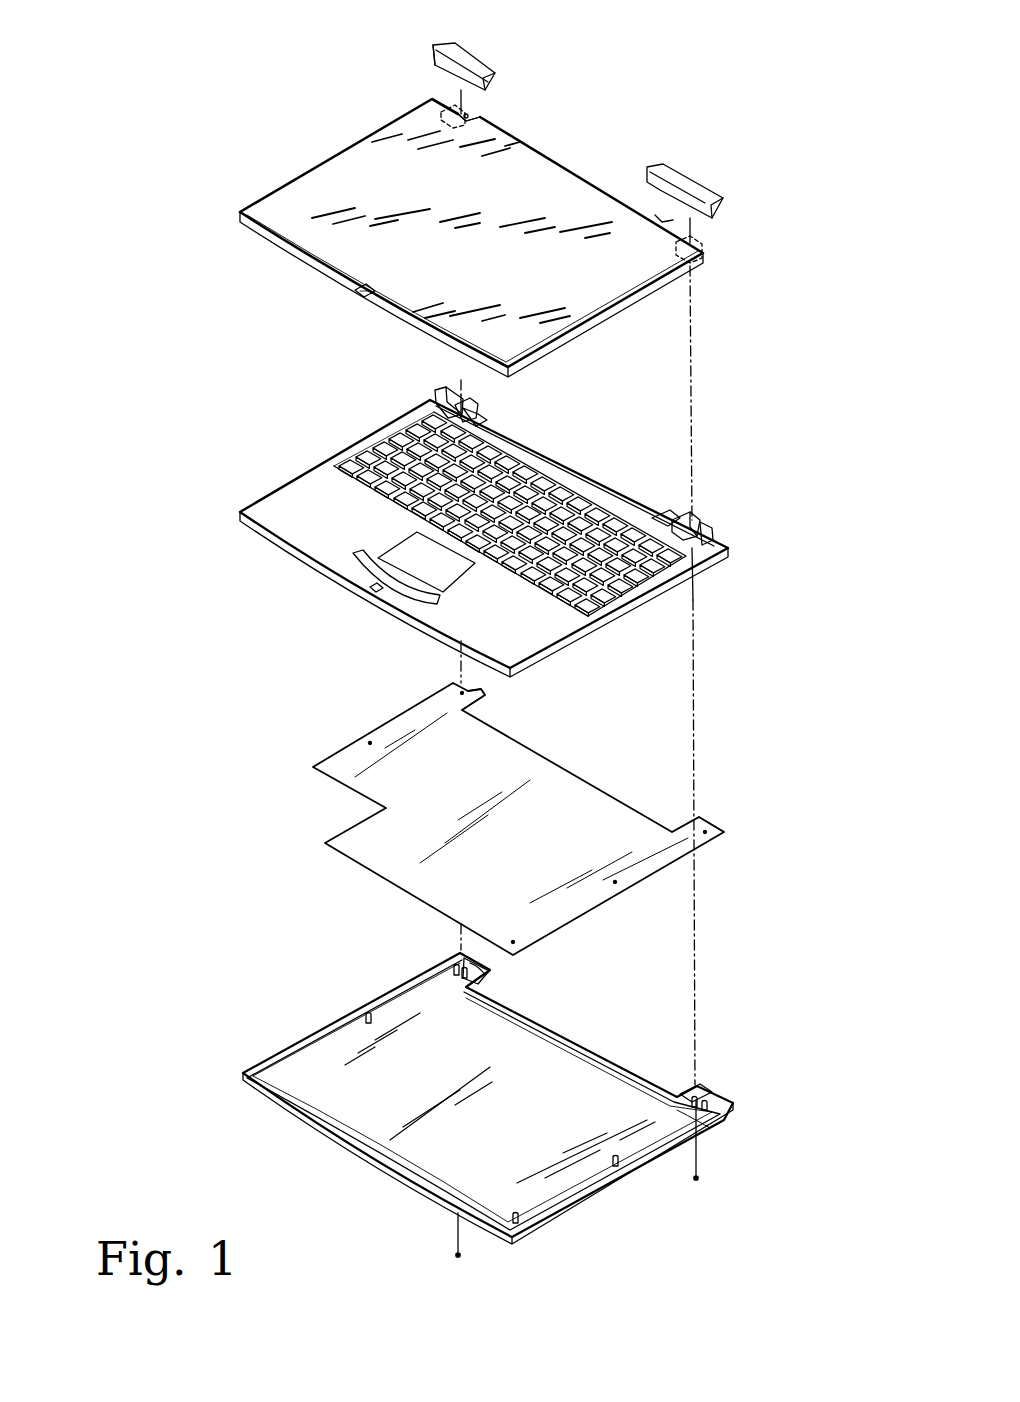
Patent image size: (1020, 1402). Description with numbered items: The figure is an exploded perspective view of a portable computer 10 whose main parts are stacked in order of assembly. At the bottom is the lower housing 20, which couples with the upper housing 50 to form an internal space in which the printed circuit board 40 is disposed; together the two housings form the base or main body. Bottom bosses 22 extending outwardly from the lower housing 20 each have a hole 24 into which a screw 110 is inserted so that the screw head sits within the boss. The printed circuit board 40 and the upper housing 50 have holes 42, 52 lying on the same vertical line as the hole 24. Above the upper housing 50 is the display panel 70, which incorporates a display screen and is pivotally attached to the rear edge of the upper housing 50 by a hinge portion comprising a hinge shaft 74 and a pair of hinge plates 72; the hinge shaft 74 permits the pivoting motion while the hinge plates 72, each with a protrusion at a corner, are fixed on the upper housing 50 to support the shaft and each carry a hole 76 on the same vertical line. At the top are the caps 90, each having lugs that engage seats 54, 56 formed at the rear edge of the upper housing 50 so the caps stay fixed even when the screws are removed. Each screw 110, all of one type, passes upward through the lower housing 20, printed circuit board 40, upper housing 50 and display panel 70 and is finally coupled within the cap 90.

The portable computer 10 is at (173, 139).
The lower housing 20 is at (347, 1123).
The bottom boss 22 is at (490, 984).
The hole 24 is at (482, 970).
The printed circuit board 40 is at (350, 767).
The hole 42 is at (483, 702).
The upper housing 50 is at (290, 492).
The hole 52 is at (468, 406).
The seat 54 is at (464, 395).
The seat 56 is at (480, 414).
The display panel 70 is at (318, 177).
The hinge plate 72 is at (438, 115).
The hinge shaft 74 is at (466, 121).
The hole 76 is at (468, 114).
The cap 90 is at (460, 44).
The screw 110 is at (455, 1255).